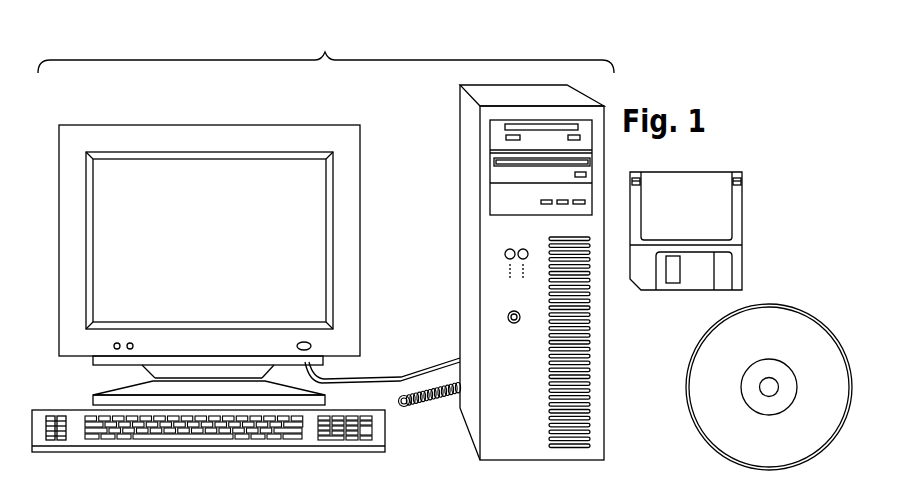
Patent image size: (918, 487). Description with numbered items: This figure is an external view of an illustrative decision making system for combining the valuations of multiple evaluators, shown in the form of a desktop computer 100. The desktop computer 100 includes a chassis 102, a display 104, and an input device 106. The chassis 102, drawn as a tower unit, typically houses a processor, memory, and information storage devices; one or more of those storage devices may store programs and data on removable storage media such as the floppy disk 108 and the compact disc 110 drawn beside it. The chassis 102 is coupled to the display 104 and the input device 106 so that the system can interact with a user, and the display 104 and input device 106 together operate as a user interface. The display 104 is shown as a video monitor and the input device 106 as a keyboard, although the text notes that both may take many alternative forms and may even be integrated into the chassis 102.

The desktop computer 100 is at (326, 49).
The chassis 102 is at (460, 309).
The display 104 is at (80, 357).
The input device 106 is at (73, 453).
The floppy disk 108 is at (745, 232).
The compact disc 110 is at (779, 291).